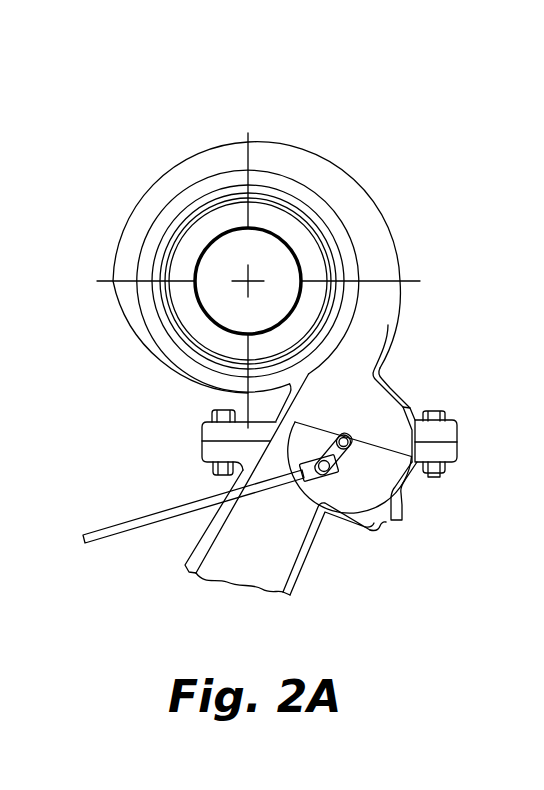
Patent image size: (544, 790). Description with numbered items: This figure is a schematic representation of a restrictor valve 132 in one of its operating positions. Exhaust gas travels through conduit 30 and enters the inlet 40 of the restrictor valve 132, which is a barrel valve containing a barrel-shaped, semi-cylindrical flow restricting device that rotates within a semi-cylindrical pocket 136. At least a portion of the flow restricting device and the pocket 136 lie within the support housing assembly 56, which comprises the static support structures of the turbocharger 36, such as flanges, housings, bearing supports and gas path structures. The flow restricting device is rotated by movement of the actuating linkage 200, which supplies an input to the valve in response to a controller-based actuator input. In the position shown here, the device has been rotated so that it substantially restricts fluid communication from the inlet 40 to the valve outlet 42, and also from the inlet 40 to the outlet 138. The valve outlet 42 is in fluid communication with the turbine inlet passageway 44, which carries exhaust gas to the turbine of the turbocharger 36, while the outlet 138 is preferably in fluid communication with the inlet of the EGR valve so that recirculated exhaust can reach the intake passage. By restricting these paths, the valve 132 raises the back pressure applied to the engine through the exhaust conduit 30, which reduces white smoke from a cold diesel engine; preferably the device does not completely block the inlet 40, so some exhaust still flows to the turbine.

The turbocharger 36 is at (362, 147).
The turbine inlet passageway 44 is at (368, 260).
The valve outlet 42 is at (338, 392).
The semi-cylindrical pocket 136 is at (413, 397).
The support housing assembly 56 is at (444, 437).
The inlet 40 is at (270, 502).
The actuating linkage 200 is at (151, 508).
The conduit 30 is at (279, 558).
The outlet 138 is at (392, 522).
The restrictor valve 132 is at (416, 489).